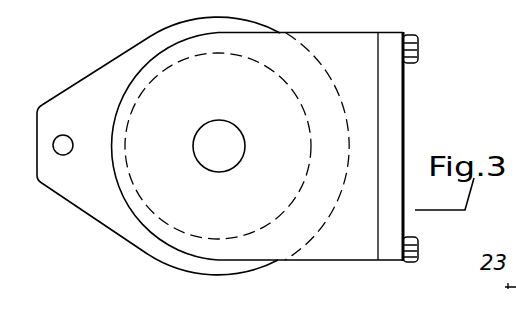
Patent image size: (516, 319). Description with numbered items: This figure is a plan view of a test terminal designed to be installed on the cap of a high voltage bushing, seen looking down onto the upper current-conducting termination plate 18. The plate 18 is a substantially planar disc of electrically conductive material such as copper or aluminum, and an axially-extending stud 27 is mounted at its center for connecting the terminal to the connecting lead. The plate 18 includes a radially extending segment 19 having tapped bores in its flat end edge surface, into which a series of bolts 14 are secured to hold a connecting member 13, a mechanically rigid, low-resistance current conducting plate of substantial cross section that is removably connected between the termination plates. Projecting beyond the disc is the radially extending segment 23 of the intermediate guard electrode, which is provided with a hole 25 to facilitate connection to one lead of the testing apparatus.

The connecting member 13 is at (393, 116).
The bolts 14 is at (418, 48).
The upper current-conducting termination plate 18 is at (163, 55).
The radially extending segment 19 is at (370, 22).
The radially extending segment 23 is at (90, 67).
The hole 25 is at (64, 152).
The stud 27 is at (205, 135).